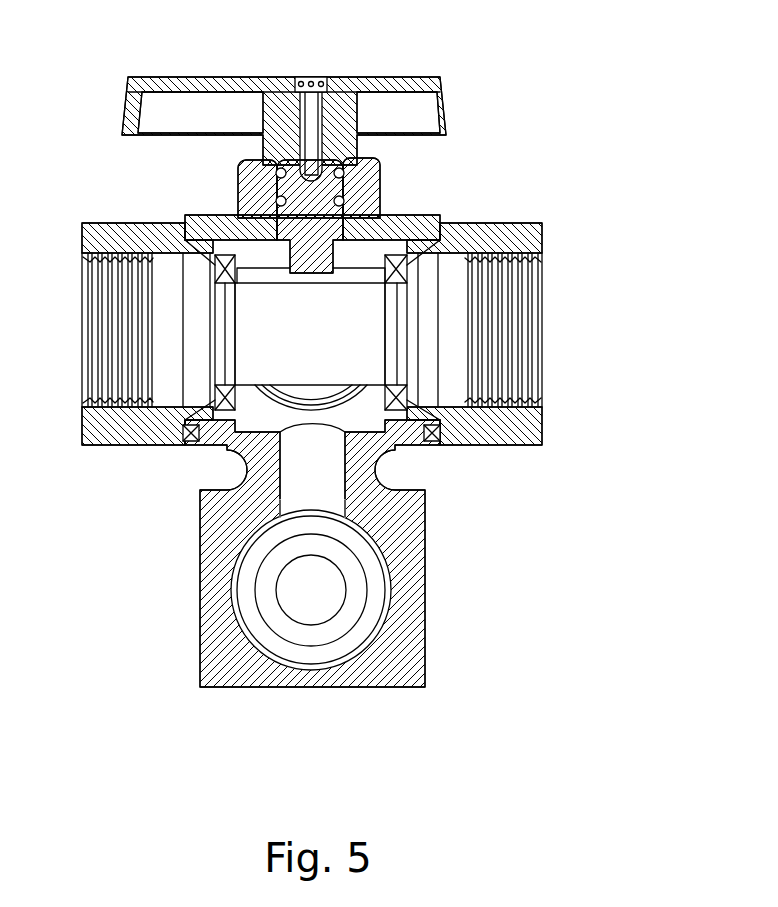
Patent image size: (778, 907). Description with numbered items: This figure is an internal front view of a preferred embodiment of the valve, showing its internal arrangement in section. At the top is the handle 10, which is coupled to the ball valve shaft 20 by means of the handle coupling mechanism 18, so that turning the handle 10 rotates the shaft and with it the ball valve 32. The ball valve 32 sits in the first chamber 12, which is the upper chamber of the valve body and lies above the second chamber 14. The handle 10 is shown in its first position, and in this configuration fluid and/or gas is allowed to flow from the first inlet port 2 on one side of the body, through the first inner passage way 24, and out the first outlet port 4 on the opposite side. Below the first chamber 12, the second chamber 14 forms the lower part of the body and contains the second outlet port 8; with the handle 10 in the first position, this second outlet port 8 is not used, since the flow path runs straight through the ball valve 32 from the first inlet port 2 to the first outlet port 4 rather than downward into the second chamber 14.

The first inlet port 2 is at (493, 215).
The first outlet port 4 is at (115, 217).
The second outlet port 8 is at (300, 600).
The handle 10 is at (410, 76).
The first chamber 12 is at (363, 280).
The second chamber 14 is at (407, 667).
The handle coupling mechanism 18 is at (312, 78).
The ball valve shaft 20 is at (283, 213).
The first inner passage way 24 is at (325, 350).
The ball valve 32 is at (347, 265).